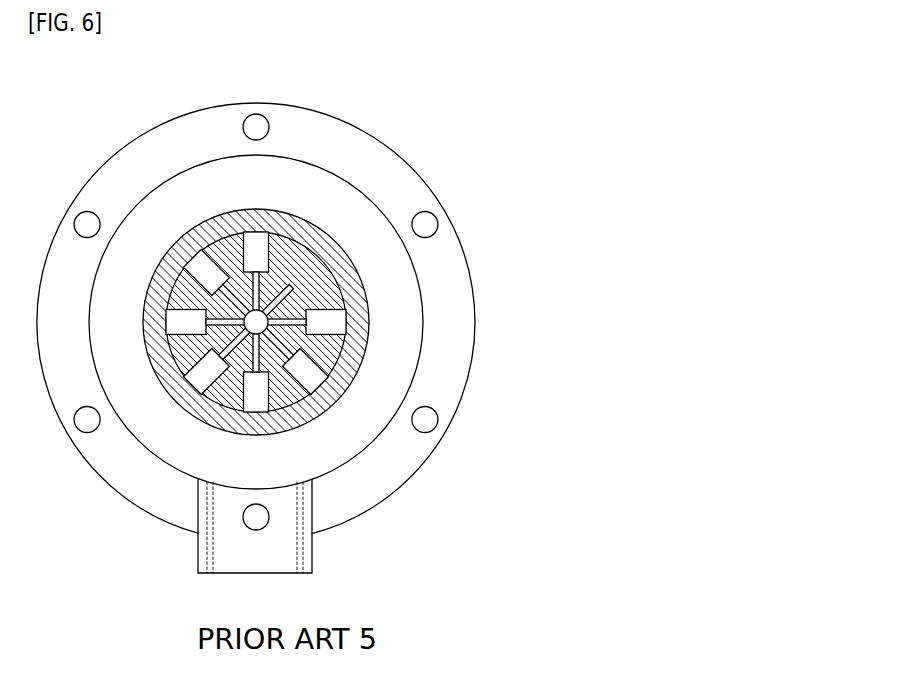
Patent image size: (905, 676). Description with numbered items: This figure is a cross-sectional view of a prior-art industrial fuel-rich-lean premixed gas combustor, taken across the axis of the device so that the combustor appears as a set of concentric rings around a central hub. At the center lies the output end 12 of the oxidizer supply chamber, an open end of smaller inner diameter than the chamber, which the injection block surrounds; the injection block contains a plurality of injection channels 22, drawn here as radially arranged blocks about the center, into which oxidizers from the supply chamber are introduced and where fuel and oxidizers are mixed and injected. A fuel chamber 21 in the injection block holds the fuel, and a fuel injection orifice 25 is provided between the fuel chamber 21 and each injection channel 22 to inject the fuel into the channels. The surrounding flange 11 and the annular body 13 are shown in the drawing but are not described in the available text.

The flange housing 11 is at (447, 305).
The output end 12 is at (241, 223).
The housing body 13 is at (299, 192).
The fuel chamber 21 is at (305, 365).
The injection channels 22 is at (258, 255).
The fuel injection orifice 25 is at (302, 310).